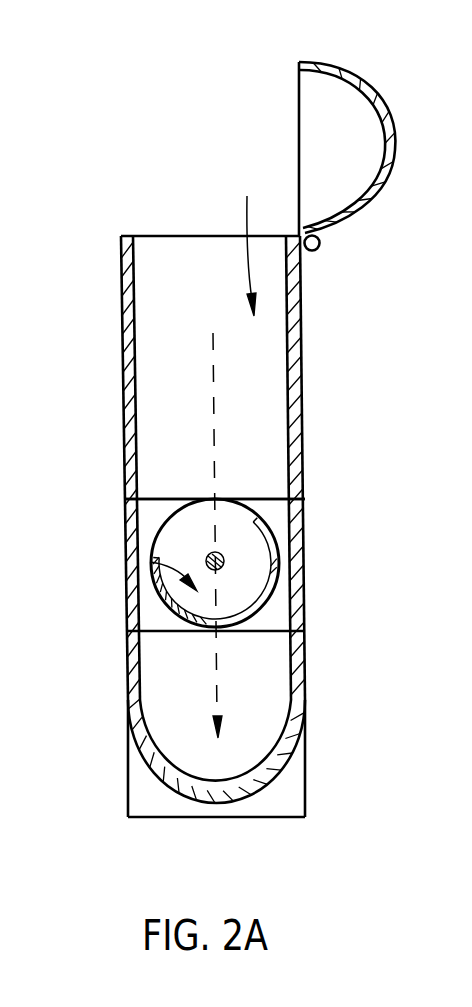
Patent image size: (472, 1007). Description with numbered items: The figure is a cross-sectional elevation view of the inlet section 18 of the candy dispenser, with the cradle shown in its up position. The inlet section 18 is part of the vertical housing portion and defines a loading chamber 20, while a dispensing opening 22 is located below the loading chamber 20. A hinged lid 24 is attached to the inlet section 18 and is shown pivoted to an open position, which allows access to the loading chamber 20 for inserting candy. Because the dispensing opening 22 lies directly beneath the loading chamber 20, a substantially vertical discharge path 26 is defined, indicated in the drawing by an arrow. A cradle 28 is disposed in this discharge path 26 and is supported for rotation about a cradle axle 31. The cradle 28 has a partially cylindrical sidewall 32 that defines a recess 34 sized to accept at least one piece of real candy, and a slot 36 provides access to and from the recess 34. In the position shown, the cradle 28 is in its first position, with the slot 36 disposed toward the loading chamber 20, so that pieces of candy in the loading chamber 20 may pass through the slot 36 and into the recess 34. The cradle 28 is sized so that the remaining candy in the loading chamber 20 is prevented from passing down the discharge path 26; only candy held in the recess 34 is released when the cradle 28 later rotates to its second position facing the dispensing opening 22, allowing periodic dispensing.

The inlet section 18 is at (123, 487).
The loading chamber 20 is at (251, 242).
The dispensing opening 22 is at (183, 742).
The hinged lid 24 is at (357, 88).
The discharge path 26 is at (212, 373).
The cradle 28 is at (238, 523).
The cradle axle 31 is at (205, 560).
The partially cylindrical sidewall 32 is at (273, 597).
The recess 34 is at (150, 562).
The slot 36 is at (215, 464).